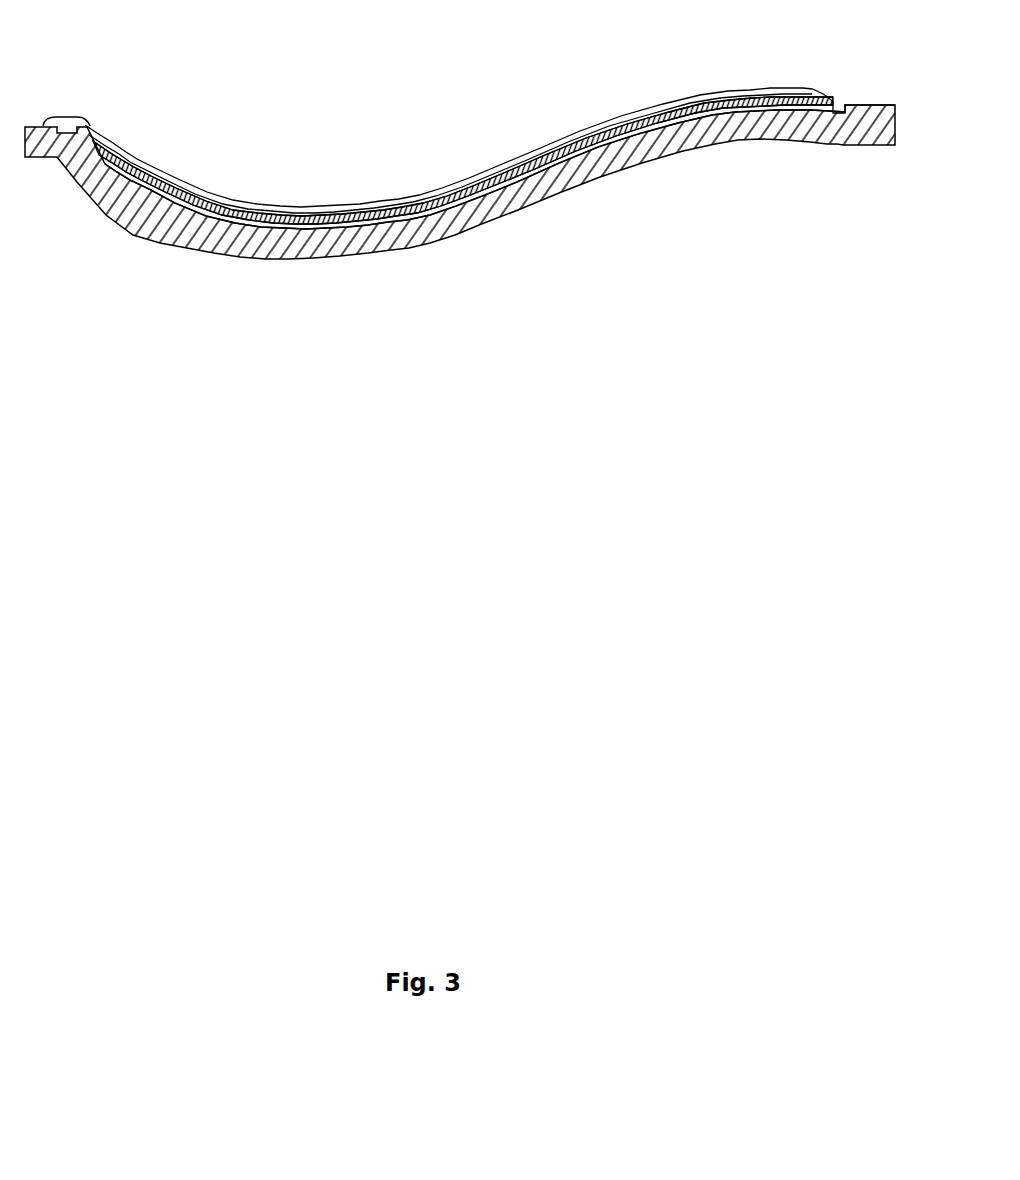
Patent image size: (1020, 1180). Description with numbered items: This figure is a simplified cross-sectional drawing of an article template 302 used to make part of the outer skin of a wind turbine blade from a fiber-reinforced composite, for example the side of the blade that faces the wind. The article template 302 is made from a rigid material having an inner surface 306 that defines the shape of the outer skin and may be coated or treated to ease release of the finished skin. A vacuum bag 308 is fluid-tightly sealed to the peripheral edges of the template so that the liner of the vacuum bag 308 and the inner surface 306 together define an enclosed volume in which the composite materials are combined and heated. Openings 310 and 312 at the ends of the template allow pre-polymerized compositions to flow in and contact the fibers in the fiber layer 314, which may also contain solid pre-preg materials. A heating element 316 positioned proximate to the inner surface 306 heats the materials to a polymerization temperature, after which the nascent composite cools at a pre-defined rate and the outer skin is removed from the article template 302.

The article template 302 is at (340, 245).
The inner surface 306 is at (313, 220).
The vacuum bag 308 is at (740, 92).
The opening 310 is at (843, 108).
The opening 312 is at (63, 122).
The fiber layer 314 is at (152, 190).
The heating element 316 is at (262, 232).